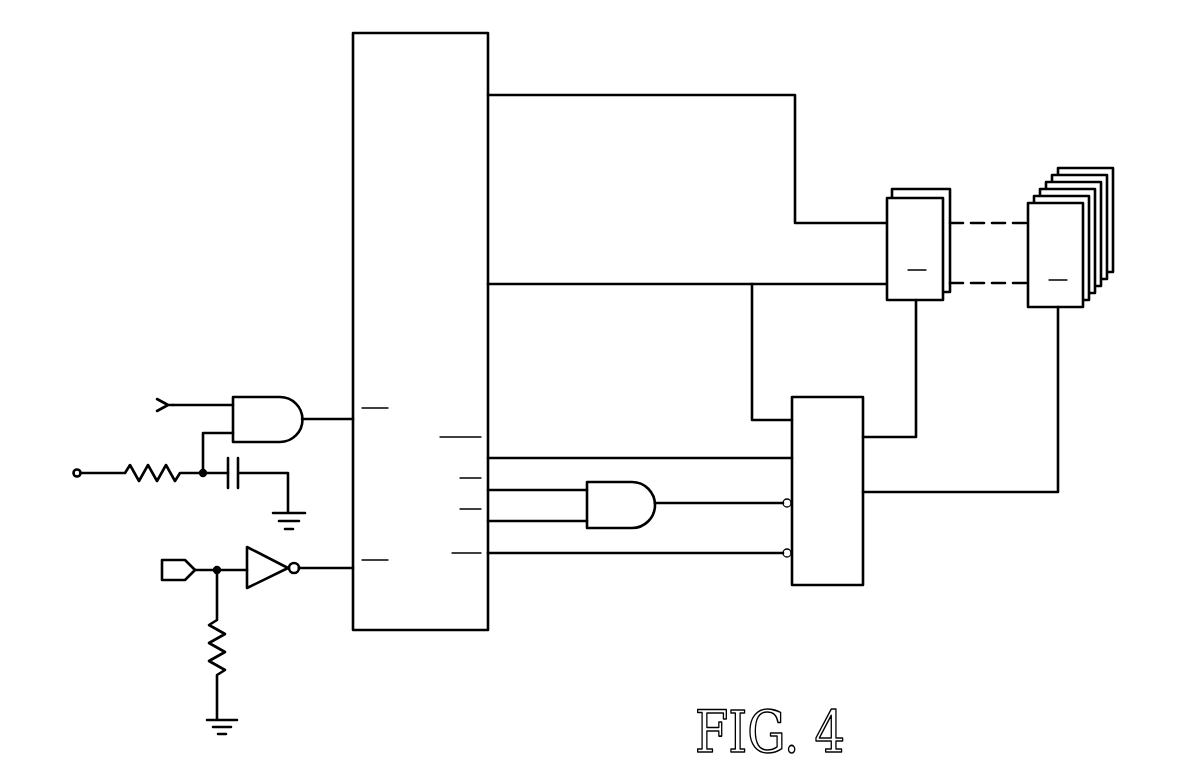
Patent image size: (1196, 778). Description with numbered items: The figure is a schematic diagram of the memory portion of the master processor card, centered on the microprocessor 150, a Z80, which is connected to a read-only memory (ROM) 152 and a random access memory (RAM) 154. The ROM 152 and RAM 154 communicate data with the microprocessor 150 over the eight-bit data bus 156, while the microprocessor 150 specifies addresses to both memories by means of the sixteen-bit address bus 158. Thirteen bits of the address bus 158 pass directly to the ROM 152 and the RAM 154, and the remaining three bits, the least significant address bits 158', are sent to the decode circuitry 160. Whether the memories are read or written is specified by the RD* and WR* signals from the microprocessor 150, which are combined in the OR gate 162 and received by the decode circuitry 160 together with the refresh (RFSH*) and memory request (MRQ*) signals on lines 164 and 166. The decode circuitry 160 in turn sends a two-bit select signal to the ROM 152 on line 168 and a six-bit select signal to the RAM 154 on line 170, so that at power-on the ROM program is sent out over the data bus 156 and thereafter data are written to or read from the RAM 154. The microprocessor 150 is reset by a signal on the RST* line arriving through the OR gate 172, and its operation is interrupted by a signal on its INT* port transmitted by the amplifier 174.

The microprocessor 150 is at (352, 90).
The read-only memory (ROM) 152 is at (872, 200).
The random access memory (RAM) 154 is at (1124, 180).
The data bus 156 is at (763, 93).
The address bus 158 is at (687, 261).
The least significant three bits of the address bus 158' is at (733, 352).
The decode circuitry 160 is at (865, 556).
The OR gate 162 is at (655, 513).
The refresh (RFSH*) line 164 is at (528, 457).
The memory request (MRQ*) line 166 is at (618, 555).
The ROM select line 168 is at (917, 417).
The RAM select line 170 is at (1058, 440).
The OR gate 172 is at (277, 397).
The amplifier 174 is at (272, 578).